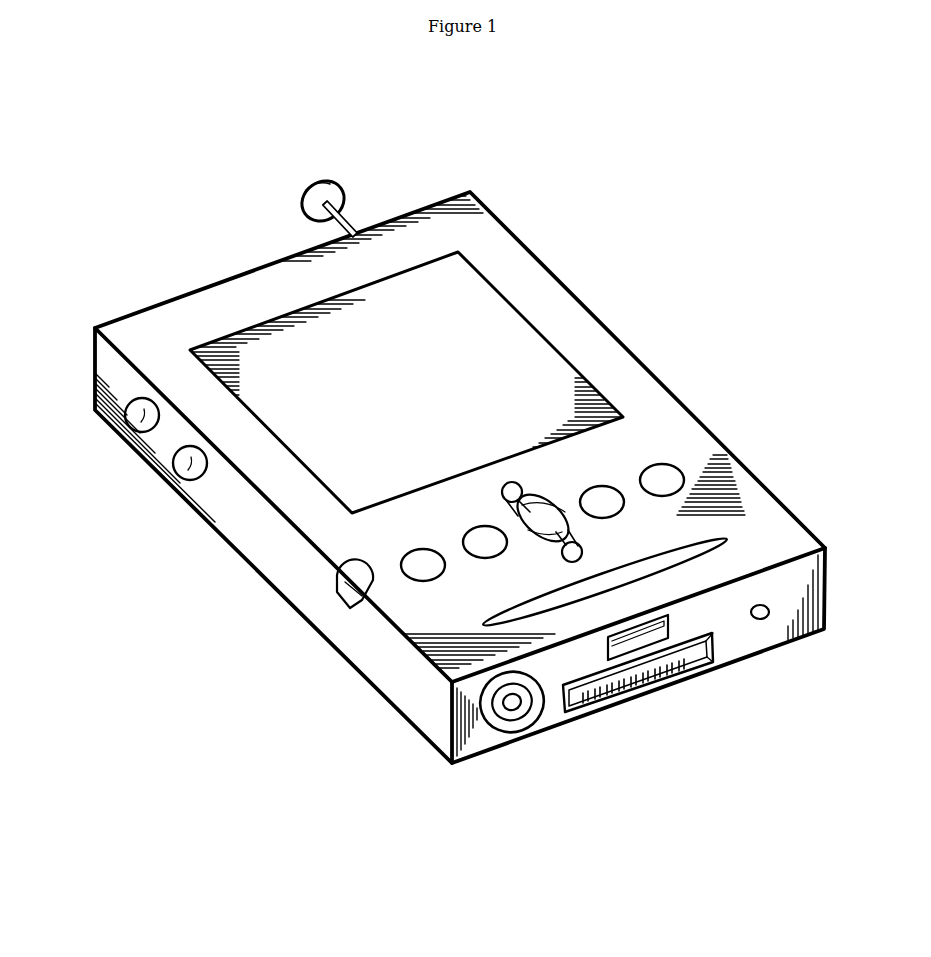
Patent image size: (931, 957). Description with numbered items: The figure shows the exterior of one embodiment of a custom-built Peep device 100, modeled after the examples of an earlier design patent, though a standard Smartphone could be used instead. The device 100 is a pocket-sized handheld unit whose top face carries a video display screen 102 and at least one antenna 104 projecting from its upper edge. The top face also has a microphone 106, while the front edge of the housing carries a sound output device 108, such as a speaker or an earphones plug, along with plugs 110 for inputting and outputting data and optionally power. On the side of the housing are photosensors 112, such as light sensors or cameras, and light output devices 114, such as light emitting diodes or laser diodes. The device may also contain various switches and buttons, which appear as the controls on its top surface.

The Peep device 100 is at (593, 287).
The video display screen 102 is at (335, 447).
The antenna 104 is at (352, 207).
The microphone 106 is at (722, 528).
The sound output device 108 is at (498, 733).
The plugs 110 is at (642, 703).
The photosensors 112 is at (140, 425).
The light output devices 114 is at (178, 478).